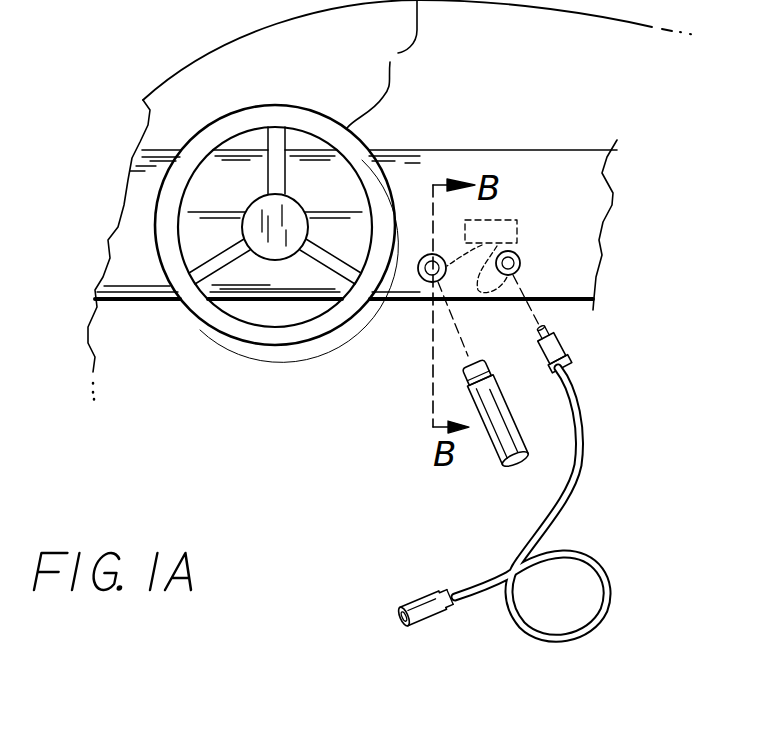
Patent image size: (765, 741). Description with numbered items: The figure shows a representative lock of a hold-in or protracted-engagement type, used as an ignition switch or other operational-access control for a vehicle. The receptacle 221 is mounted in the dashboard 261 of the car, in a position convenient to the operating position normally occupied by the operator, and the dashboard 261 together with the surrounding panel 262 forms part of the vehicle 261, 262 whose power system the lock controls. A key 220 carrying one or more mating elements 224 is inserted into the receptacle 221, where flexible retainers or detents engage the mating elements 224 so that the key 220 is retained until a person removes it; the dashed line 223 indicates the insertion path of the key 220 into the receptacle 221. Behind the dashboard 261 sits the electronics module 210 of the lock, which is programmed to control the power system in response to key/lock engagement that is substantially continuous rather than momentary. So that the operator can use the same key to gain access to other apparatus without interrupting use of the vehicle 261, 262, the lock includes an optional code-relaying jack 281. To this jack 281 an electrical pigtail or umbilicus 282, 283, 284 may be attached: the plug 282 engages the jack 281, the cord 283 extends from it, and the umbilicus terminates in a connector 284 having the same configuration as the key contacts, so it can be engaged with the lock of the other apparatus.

The electronics module 210 is at (500, 220).
The key 220 is at (490, 405).
The receptacle 221 is at (420, 276).
The insertion path 223 is at (458, 338).
The mating elements 224 is at (506, 380).
The dashboard 261 is at (588, 162).
The vehicle 262 is at (398, 53).
The code-relaying jack 281 is at (521, 262).
The umbilicus 282 is at (557, 346).
The umbilicus 283 is at (578, 418).
The connector 284 is at (432, 603).